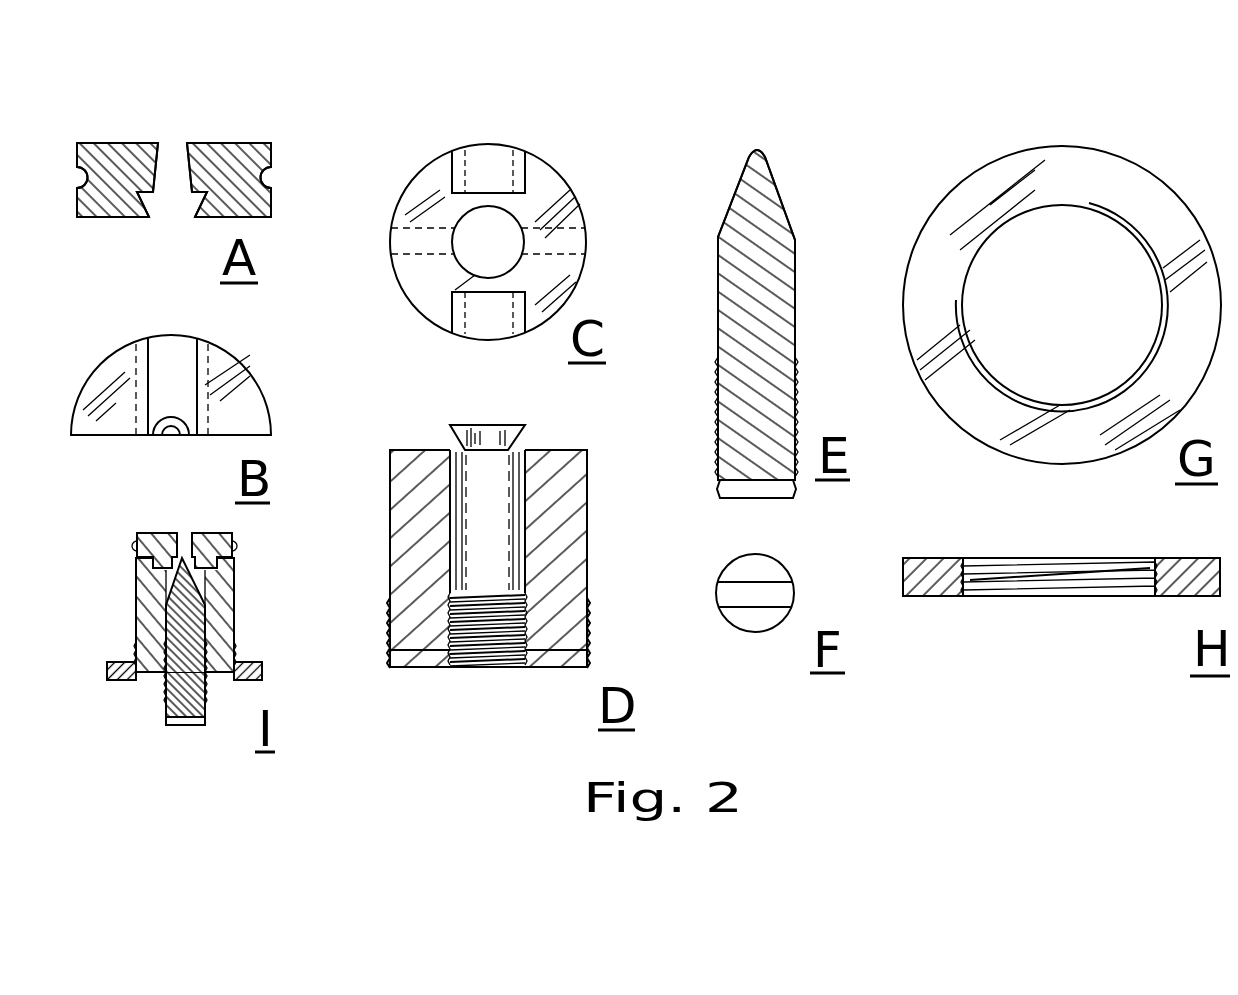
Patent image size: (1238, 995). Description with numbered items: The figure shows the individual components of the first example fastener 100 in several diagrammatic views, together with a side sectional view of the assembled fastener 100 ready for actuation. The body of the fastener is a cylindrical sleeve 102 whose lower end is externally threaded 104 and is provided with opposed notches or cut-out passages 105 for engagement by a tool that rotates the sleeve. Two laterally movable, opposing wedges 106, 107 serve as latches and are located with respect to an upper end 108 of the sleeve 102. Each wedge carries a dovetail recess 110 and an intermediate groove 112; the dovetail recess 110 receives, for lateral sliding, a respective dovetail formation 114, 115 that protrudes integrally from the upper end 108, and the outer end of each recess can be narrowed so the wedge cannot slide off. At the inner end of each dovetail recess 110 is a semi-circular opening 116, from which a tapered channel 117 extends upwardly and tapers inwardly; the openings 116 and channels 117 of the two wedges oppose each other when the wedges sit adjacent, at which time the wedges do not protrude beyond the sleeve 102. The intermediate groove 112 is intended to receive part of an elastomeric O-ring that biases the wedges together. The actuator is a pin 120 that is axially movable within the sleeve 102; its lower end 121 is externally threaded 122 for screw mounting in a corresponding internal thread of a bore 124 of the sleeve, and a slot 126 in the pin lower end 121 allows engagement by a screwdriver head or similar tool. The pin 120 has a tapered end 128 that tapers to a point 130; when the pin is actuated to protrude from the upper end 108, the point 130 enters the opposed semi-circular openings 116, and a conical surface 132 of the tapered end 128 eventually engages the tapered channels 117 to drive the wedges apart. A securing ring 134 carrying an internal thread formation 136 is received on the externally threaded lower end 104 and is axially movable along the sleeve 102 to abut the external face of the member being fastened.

In FIG. 2I, the fastener 100 is at (206, 634).
In FIG. 2I, the cylindrical sleeve 102 is at (236, 620).
In FIG. 2C, the cylindrical sleeve 102 is at (509, 223).
In FIG. 2D, the cylindrical sleeve 102 is at (553, 450).
In FIG. 2D, the externally threaded lower end 104 is at (590, 624).
In FIG. 2C, the cut-out passages 105 is at (563, 245).
In FIG. 2D, the cut-out passages 105 is at (428, 658).
In FIG. 2A, the wedge 106 is at (223, 160).
In FIG. 2B, the wedge 106 is at (194, 372).
In FIG. 2I, the wedge 106 is at (155, 534).
In FIG. 2A, the wedge 107 is at (240, 138).
In FIG. 2B, the wedge 107 is at (283, 338).
In FIG. 2I, the wedge 107 is at (232, 545).
In FIG. 2C, the upper end of sleeve 108 is at (548, 182).
In FIG. 2D, the upper end of sleeve 108 is at (428, 450).
In FIG. 2A, the dovetail recess 110 is at (176, 212).
In FIG. 2B, the dovetail recess 110 is at (170, 362).
In FIG. 2A, the intermediate groove 112 is at (279, 179).
In FIG. 2C, the dovetail formation 114 is at (477, 168).
In FIG. 2D, the dovetail formation 114 is at (487, 424).
In FIG. 2C, the dovetail formation 115 is at (478, 310).
In FIG. 2B, the semi-circular opening 116 is at (157, 432).
In FIG. 2A, the tapered channel 117 is at (174, 165).
In FIG. 2B, the tapered channel 117 is at (172, 440).
In FIG. 2I, the pin 120 is at (166, 700).
In FIG. 2E, the pin 120 is at (759, 302).
In FIG. 2F, the pin 120 is at (759, 573).
In FIG. 2E, the lower end of pin 121 is at (803, 455).
In FIG. 2E, the external thread 122 is at (716, 413).
In FIG. 2C, the bore 124 is at (524, 263).
In FIG. 2D, the bore 124 is at (516, 632).
In FIG. 2F, the slot 126 is at (782, 593).
In FIG. 2E, the tapered end 128 is at (767, 173).
In FIG. 2E, the point 130 is at (757, 148).
In FIG. 2E, the conical surface 132 is at (740, 187).
In FIG. 2I, the securing ring 134 is at (217, 679).
In FIG. 2G, the securing ring 134 is at (1062, 286).
In FIG. 2H, the securing ring 134 is at (1061, 557).
In FIG. 2G, the internal thread formation 136 is at (1112, 226).
In FIG. 2H, the internal thread formation 136 is at (1030, 578).